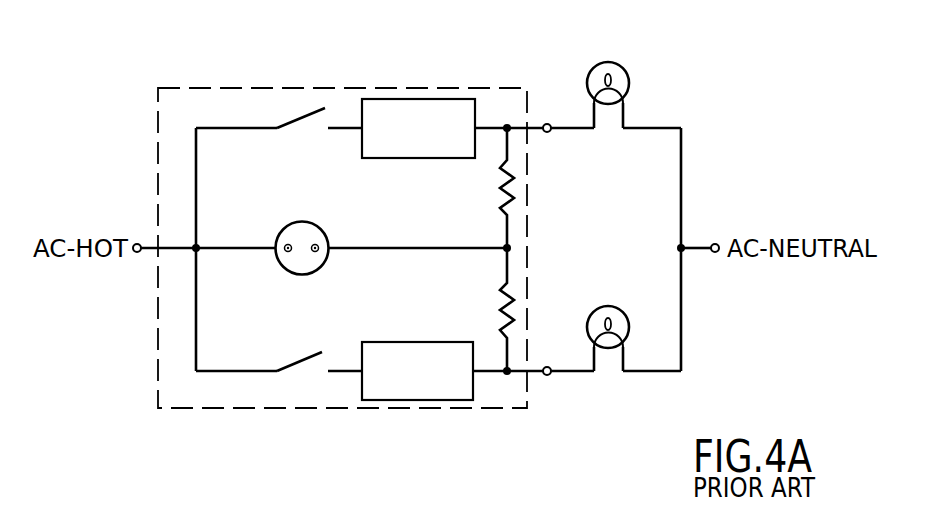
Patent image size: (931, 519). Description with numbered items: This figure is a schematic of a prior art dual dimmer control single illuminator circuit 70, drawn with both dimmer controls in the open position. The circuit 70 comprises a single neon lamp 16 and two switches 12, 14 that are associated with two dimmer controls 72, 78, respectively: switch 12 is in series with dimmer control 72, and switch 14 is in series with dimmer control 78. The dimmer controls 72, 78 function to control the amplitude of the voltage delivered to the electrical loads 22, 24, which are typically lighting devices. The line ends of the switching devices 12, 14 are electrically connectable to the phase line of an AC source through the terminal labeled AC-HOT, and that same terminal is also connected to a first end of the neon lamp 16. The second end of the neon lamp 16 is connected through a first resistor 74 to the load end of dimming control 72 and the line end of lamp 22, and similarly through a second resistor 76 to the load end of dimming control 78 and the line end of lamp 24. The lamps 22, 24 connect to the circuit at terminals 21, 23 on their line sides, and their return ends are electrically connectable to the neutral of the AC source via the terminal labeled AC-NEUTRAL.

The dual dimmer control single illuminator circuit 70 is at (245, 78).
The switch 12 is at (300, 110).
The switch 14 is at (294, 365).
The neon lamp 16 is at (298, 222).
The first lamp terminal 21 is at (548, 124).
The lamp 22 is at (629, 88).
The second lamp terminal 23 is at (550, 377).
The lamp 24 is at (624, 318).
The dimmer control 72 is at (424, 160).
The first resistor 74 is at (513, 187).
The second resistor 76 is at (513, 310).
The dimmer control 78 is at (430, 340).